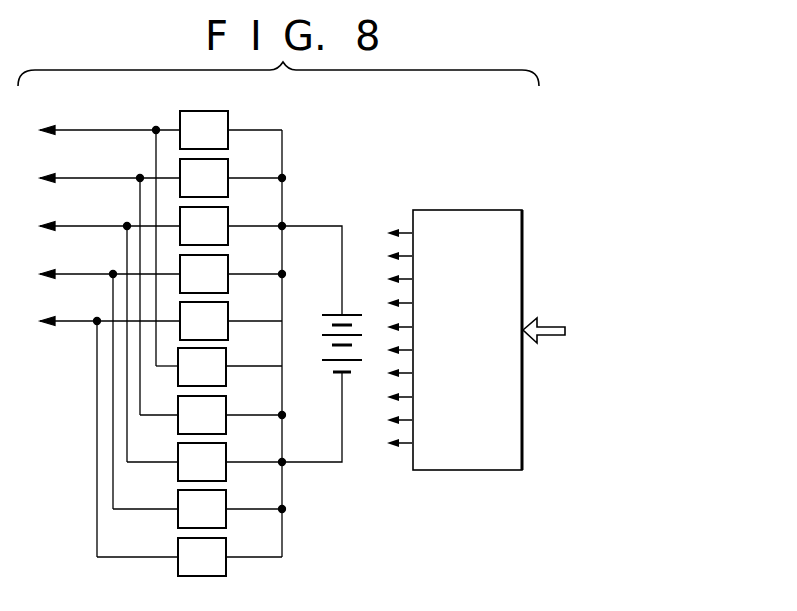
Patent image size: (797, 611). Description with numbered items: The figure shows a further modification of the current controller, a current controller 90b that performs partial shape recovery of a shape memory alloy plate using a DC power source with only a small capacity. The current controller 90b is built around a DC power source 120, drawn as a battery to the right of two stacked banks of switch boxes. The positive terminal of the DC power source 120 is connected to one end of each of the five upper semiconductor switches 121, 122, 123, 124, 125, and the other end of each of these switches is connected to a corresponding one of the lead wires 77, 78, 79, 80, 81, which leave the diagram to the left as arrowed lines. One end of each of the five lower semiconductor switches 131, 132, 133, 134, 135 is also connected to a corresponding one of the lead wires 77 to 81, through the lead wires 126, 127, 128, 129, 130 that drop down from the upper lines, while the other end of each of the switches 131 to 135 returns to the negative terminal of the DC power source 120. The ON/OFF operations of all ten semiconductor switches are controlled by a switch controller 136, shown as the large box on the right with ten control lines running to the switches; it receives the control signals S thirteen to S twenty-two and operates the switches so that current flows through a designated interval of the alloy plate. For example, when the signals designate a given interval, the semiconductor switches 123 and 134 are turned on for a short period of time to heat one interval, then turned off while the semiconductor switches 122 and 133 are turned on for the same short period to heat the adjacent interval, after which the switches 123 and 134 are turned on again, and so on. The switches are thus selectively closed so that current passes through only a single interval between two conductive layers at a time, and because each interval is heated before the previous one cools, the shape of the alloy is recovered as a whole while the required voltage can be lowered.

The lead wire 77 is at (67, 321).
The lead wire 78 is at (67, 274).
The lead wire 79 is at (68, 226).
The lead wire 80 is at (70, 178).
The lead wire 81 is at (69, 128).
The current controller 90b is at (352, 205).
The DC power source 120 is at (313, 352).
The semiconductor switch 121 is at (232, 118).
The semiconductor switch 122 is at (229, 178).
The semiconductor switch 123 is at (229, 227).
The semiconductor switch 124 is at (229, 274).
The semiconductor switch 125 is at (229, 321).
The lead wire 126 is at (131, 558).
The lead wire 127 is at (133, 510).
The lead wire 128 is at (144, 463).
The lead wire 129 is at (152, 416).
The lead wire 130 is at (165, 367).
The semiconductor switch 131 is at (226, 381).
The semiconductor switch 132 is at (226, 430).
The semiconductor switch 133 is at (226, 477).
The semiconductor switch 134 is at (226, 525).
The semiconductor switch 135 is at (226, 570).
The switch controller 136 is at (493, 210).